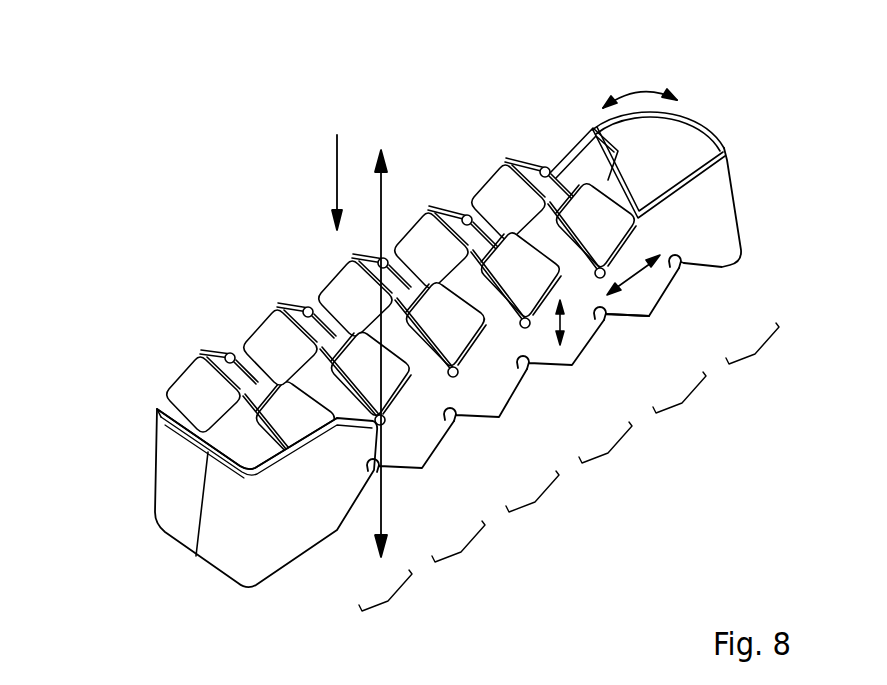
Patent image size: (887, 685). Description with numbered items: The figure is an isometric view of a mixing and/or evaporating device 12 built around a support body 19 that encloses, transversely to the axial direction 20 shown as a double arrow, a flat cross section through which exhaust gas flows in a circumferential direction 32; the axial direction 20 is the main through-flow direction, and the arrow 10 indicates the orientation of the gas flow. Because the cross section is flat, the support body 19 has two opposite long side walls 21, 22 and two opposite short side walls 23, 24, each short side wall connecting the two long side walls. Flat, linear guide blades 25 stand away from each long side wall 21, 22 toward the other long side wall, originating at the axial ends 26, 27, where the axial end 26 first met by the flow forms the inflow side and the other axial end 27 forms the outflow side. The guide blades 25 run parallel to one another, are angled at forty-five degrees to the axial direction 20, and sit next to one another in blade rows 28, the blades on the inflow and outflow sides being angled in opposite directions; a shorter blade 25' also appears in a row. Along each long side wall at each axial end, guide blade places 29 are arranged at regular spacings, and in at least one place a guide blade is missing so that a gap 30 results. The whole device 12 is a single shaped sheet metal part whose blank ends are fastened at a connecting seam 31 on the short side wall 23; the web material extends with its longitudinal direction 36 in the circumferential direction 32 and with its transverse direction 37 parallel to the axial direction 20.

The arrow 10 is at (337, 175).
The mixing and/or evaporating device 12 is at (206, 201).
The support body 19 is at (752, 195).
The axial direction 20 is at (383, 490).
The long side wall 21 is at (237, 375).
The long side wall 22 is at (485, 383).
The short side wall 23 is at (185, 527).
The short side wall 24 is at (682, 143).
The guide blade 25 is at (401, 390).
The pivoted contact plate 25' is at (584, 128).
The axial end / inflow side 26 is at (467, 213).
The axial end / outflow side 27 is at (630, 320).
The blade row 28 is at (150, 390).
The guide blade place 29 is at (390, 601).
The gap 30 is at (268, 431).
The connecting seam 31 is at (200, 502).
The circumferential direction 32 is at (640, 92).
The longitudinal direction 36 is at (658, 300).
The transverse direction 37 is at (567, 335).